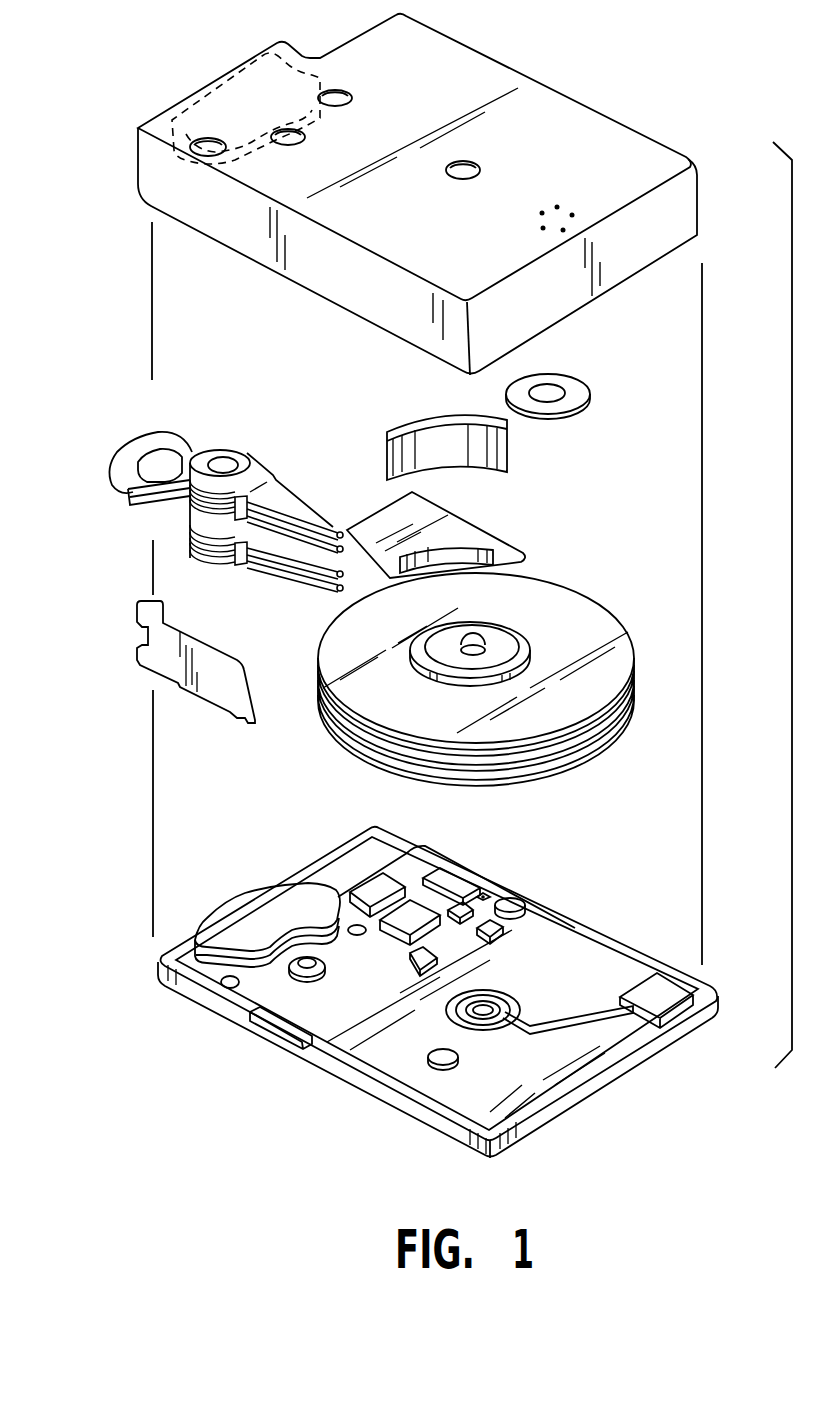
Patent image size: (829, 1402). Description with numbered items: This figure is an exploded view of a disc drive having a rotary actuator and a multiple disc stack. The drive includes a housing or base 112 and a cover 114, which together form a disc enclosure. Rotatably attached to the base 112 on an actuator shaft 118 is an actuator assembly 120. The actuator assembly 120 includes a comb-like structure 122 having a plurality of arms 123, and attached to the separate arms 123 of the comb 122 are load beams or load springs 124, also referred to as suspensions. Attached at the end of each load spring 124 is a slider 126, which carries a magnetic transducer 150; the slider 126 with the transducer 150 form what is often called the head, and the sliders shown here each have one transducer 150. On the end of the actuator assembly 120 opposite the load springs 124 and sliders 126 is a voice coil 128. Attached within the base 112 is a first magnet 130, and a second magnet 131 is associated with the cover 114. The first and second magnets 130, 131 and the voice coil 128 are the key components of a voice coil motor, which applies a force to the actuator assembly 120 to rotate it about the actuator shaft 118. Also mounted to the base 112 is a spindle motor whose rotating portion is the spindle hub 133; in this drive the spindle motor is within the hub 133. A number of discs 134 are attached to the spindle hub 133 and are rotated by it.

The base 112 is at (607, 962).
The cover 114 is at (580, 130).
The actuator shaft 118 is at (223, 457).
The actuator assembly 120 is at (177, 512).
The comb-like structure 122 is at (247, 572).
The arms 123 is at (278, 470).
The load springs 124 is at (293, 490).
The slider 126 is at (340, 528).
The voice coil 128 is at (130, 467).
The first magnet 130 is at (247, 73).
The second magnet 131 is at (220, 927).
The spindle hub 133 is at (483, 637).
The discs 134 is at (600, 623).
The magnetic transducer 150 is at (347, 532).